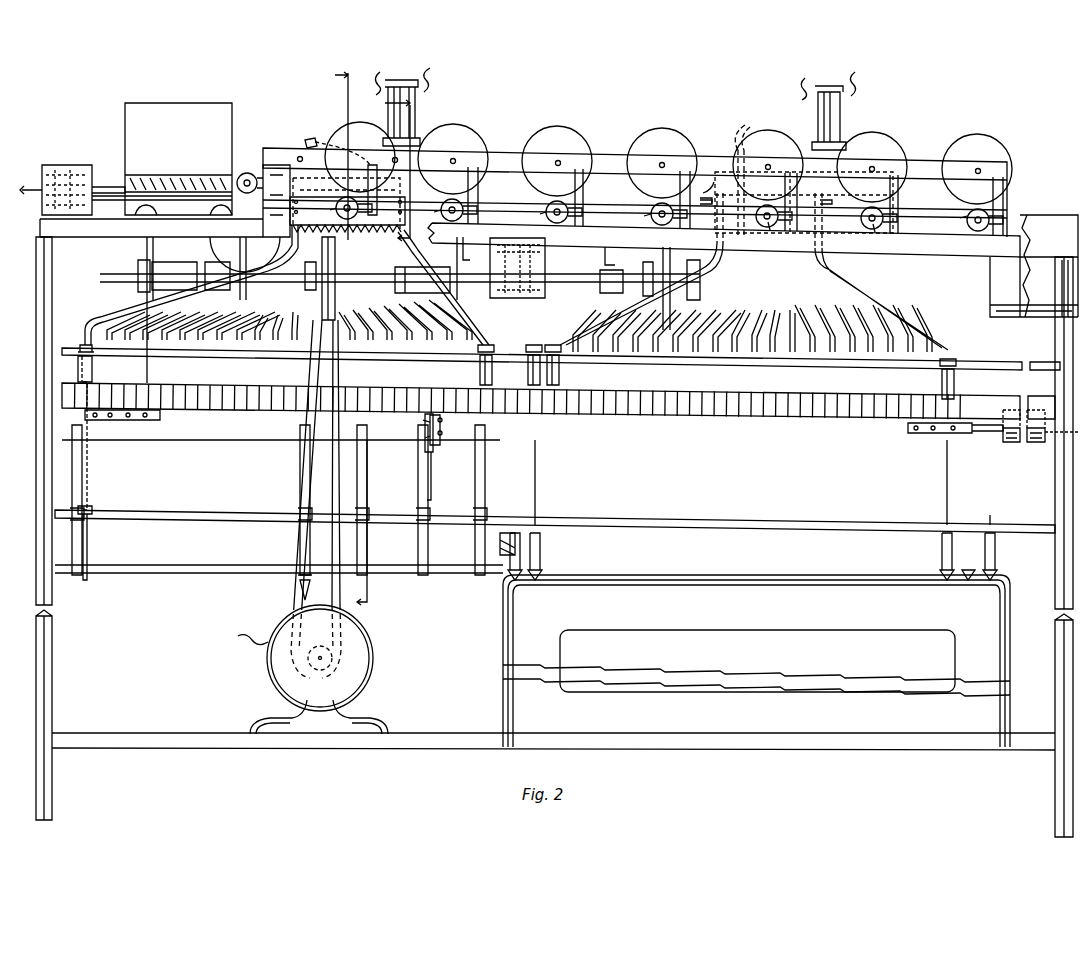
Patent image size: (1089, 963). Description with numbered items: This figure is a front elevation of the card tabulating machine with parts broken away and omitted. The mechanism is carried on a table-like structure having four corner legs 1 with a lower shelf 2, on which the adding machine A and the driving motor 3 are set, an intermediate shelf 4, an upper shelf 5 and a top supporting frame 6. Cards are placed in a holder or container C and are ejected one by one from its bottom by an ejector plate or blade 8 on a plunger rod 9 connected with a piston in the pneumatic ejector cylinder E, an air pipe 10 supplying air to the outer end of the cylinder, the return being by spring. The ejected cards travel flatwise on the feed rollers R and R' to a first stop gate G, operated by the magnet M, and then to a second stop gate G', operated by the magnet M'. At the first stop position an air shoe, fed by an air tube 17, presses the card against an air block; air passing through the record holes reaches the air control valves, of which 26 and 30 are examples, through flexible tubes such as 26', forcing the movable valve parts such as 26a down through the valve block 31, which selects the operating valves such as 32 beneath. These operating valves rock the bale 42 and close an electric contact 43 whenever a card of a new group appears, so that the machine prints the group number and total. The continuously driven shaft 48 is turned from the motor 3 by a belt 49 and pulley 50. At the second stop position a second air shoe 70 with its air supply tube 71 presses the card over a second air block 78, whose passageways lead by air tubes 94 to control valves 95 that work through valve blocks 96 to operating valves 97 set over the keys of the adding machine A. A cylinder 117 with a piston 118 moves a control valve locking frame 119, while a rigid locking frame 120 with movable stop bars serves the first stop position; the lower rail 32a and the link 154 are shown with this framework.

The corner legs 1 is at (40, 632).
The lower shelf 2 is at (868, 752).
The driving motor 3 is at (372, 652).
The intermediate shelf 4 is at (343, 339).
The upper shelf 5 is at (990, 362).
The top supporting frame 6 is at (110, 232).
The ejector plate or blade 8 is at (113, 187).
The plunger rod 9 is at (162, 206).
The air pipe 10 is at (30, 181).
The air tube 17 is at (309, 140).
The air control valve 26 is at (78, 332).
The flexible tube 26' is at (278, 285).
The movable valve part 26a is at (93, 364).
The air control valve 30 is at (408, 250).
The valve block 31 is at (185, 388).
The operating valve 32 is at (92, 510).
The lower rail 32a is at (88, 540).
The bale 42 is at (85, 555).
The electric contact 43 is at (424, 432).
The shaft 48 is at (292, 284).
The belt 49 is at (330, 505).
The pulley 50 is at (336, 304).
The second air shoe 70 is at (704, 189).
The air supply pipe or tube 71 is at (740, 171).
The second air block or head 78 is at (708, 232).
The air tubes 94 is at (690, 258).
The control valves 95 is at (560, 372).
The valve blocks 96 is at (630, 412).
The operating valves 97 is at (540, 545).
The cylinder 117 is at (1035, 442).
The piston 118 is at (1006, 442).
The control valve locking frame 119 is at (928, 434).
The locking frame 120 is at (127, 426).
The link 154 is at (424, 417).
The adding machine A is at (178, 520).
The holder or container C is at (178, 108).
The pneumatic ejector E is at (67, 180).
The stop gate G is at (356, 205).
The second stop gate G' is at (796, 202).
The magnet M is at (403, 141).
The magnet M' is at (833, 111).
The feed rollers R is at (611, 197).
The feed rollers R' is at (657, 223).